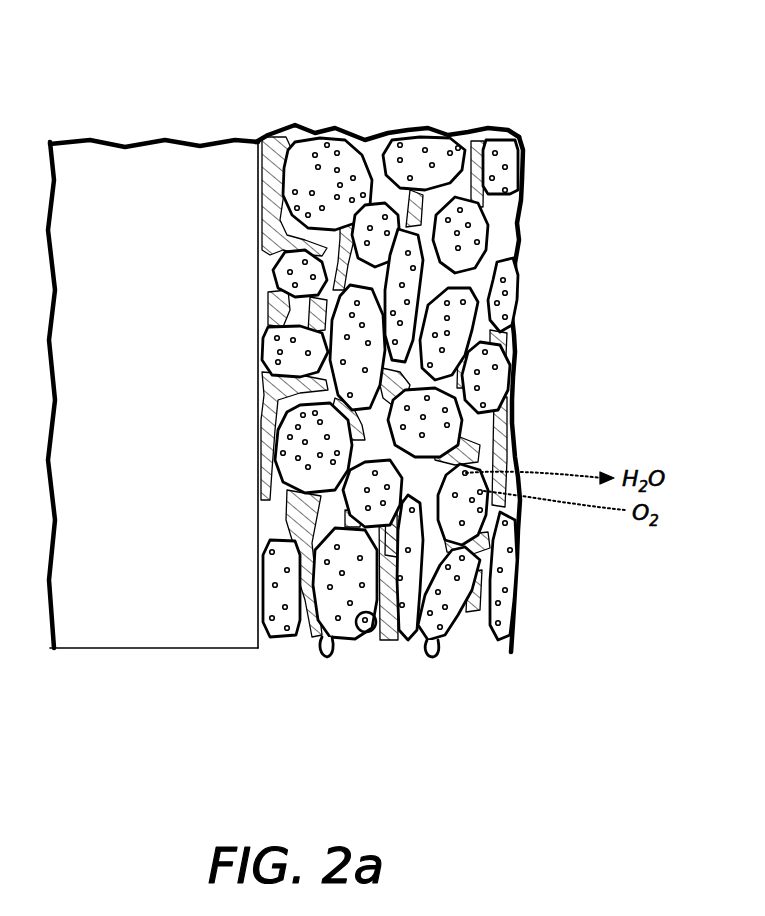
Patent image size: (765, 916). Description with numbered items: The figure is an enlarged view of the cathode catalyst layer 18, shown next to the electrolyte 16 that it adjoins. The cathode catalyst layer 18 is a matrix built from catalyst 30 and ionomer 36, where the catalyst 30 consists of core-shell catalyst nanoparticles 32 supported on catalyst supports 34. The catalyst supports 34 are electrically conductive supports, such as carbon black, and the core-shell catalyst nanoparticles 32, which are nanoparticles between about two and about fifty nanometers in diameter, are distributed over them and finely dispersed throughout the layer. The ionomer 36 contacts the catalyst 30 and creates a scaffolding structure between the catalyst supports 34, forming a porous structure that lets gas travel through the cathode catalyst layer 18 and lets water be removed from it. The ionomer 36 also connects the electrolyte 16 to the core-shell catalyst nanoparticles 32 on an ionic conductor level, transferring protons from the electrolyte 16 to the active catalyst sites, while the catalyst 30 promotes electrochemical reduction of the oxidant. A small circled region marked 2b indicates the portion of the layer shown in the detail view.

The electrolyte 16 is at (165, 395).
The cathode catalyst layer 18 is at (283, 657).
The catalyst 30 is at (466, 124).
The core-shell catalyst nanoparticles 32 is at (422, 150).
The catalyst support 34 is at (470, 134).
The ionomer 36 is at (525, 237).
The detail region shown in FIG. 2b is at (359, 634).